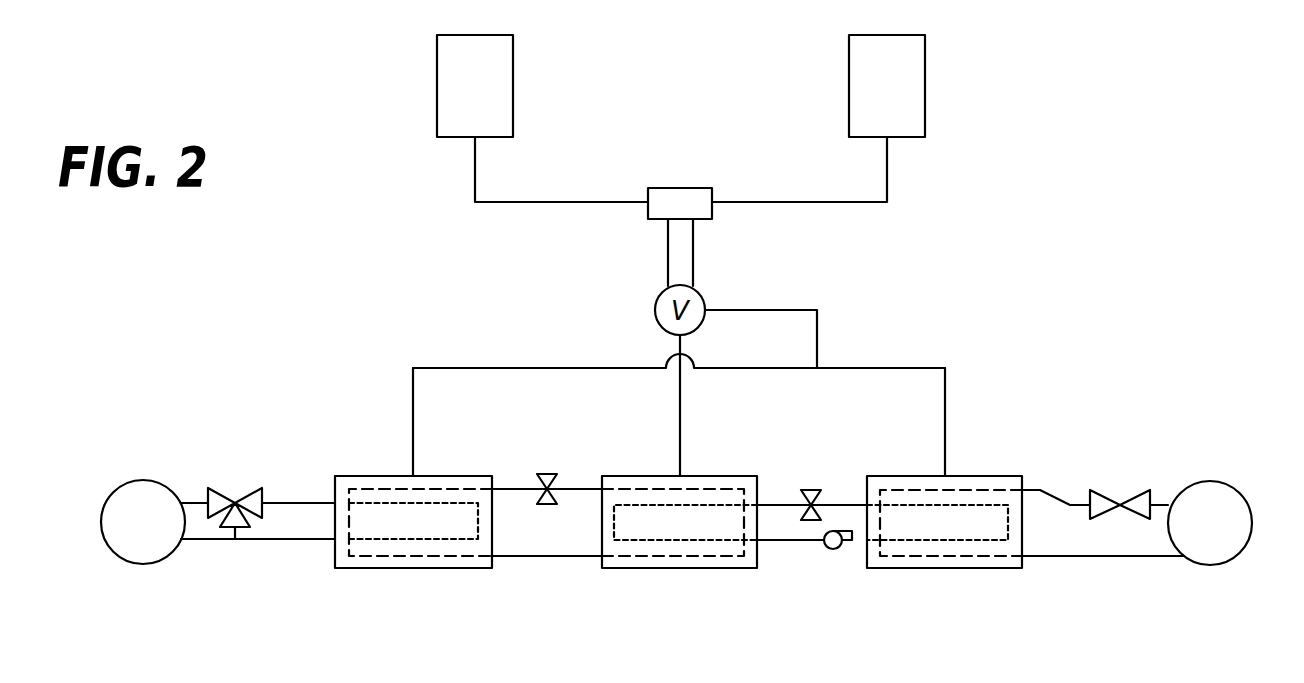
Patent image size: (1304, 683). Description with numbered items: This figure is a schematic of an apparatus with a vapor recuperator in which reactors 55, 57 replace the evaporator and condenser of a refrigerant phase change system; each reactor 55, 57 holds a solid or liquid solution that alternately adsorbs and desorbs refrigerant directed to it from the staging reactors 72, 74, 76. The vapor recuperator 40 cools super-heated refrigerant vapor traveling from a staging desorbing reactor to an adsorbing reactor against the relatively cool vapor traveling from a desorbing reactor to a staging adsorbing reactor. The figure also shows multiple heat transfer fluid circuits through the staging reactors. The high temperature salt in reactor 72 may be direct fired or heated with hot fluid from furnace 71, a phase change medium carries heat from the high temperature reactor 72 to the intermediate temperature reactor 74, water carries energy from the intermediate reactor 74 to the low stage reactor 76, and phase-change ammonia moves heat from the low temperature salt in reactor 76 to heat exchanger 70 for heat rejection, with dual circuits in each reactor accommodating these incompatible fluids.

The reactor 55 is at (437, 83).
The reactor 57 is at (925, 105).
The vapor recuperator 40 is at (712, 219).
The furnace 71 is at (150, 482).
The high temperature reactor 72 is at (405, 568).
The intermediate temperature reactor 74 is at (680, 568).
The low stage reactor 76 is at (978, 477).
The heat exchanger 70 is at (1212, 482).